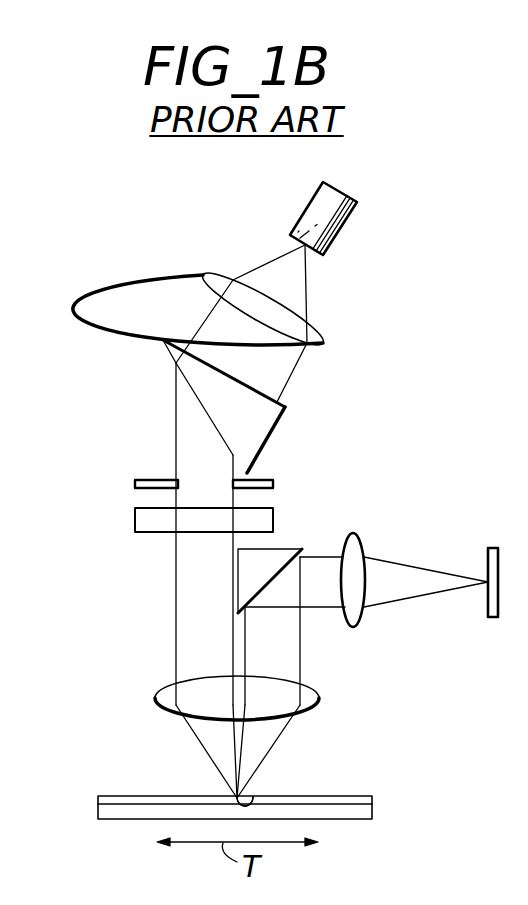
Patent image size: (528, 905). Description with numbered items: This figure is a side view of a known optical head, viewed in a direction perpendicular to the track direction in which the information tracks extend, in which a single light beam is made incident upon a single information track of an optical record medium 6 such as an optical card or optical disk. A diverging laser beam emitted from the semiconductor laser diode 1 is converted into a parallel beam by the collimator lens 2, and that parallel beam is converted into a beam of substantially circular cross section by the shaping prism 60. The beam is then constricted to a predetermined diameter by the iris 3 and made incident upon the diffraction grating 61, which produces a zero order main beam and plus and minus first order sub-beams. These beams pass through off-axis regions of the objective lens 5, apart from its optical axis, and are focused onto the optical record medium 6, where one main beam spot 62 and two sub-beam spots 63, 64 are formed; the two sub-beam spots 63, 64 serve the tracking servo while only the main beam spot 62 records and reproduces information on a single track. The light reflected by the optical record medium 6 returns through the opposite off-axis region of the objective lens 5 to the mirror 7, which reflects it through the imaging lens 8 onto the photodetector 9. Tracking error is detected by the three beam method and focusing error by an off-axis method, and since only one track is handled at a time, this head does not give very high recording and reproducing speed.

The laser diode 1 is at (348, 216).
The collimator lens 2 is at (320, 334).
The shaping prism 60 is at (161, 349).
The iris 3 is at (135, 484).
The diffraction grating 61 is at (135, 523).
The mirror 7 is at (293, 548).
The imaging lens 8 is at (360, 627).
The photodetector 9 is at (493, 548).
The objective lens 5 is at (156, 692).
The optical record medium 6 is at (373, 801).
The main beam spot 62 is at (253, 797).
The sub-beam spot 63 is at (334, 769).
The sub-beam spot 64 is at (334, 769).